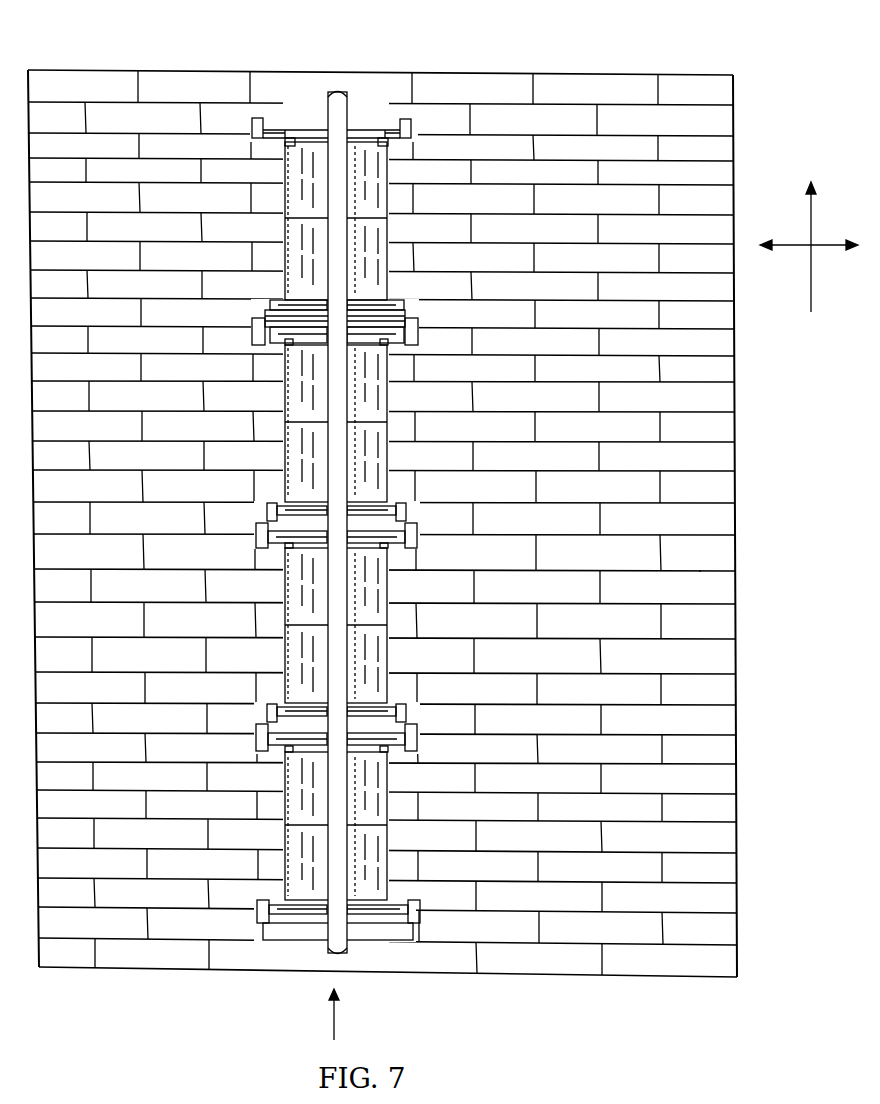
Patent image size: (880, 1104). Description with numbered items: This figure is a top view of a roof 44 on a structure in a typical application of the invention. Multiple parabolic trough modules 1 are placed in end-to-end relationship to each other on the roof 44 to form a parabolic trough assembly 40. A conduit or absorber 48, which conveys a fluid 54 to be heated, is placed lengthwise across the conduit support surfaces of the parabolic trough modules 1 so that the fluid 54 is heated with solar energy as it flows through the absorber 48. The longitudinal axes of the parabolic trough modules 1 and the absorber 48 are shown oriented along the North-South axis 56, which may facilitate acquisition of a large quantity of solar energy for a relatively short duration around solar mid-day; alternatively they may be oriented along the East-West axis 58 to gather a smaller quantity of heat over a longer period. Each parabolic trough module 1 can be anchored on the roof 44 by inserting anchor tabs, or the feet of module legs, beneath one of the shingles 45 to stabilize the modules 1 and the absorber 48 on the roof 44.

The parabolic trough module 1 is at (278, 250).
The parabolic trough assembly 40 is at (309, 527).
The roof 44 is at (736, 553).
The shingles 45 is at (707, 655).
The conduit or absorber 48 is at (333, 928).
The fluid 54 is at (335, 1020).
The North-South axis 56 is at (811, 304).
The East-West axis 58 is at (790, 248).